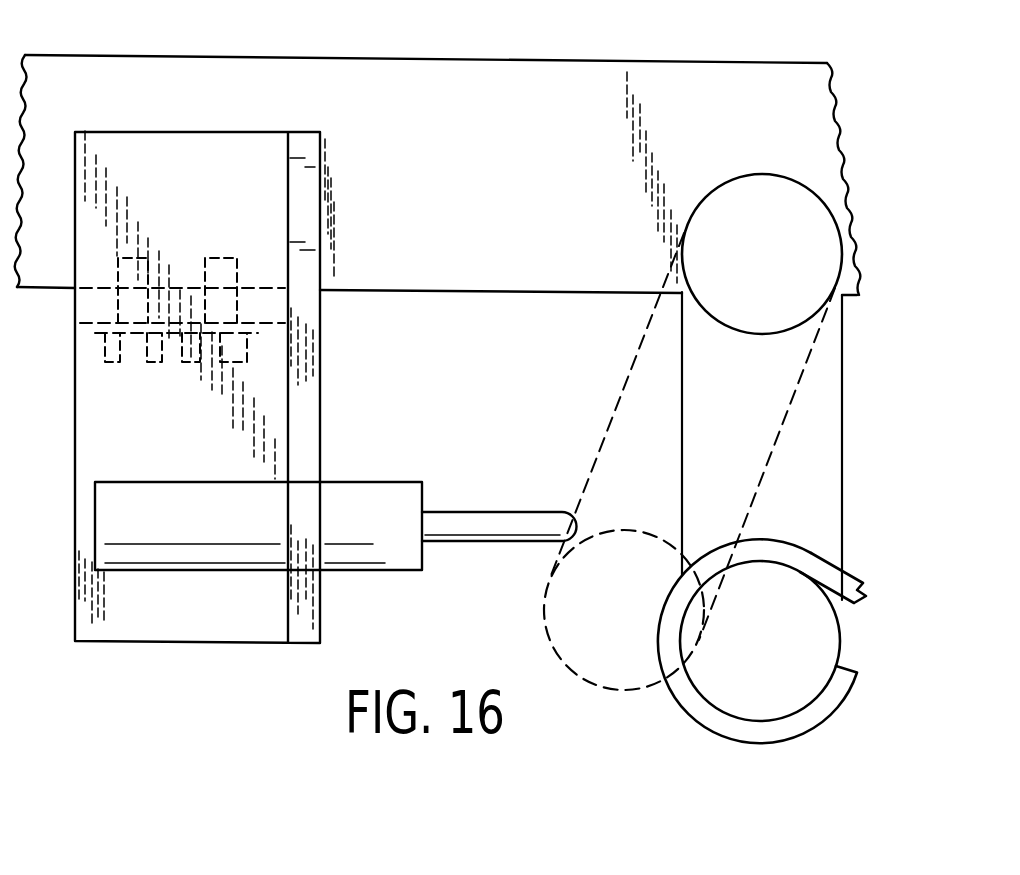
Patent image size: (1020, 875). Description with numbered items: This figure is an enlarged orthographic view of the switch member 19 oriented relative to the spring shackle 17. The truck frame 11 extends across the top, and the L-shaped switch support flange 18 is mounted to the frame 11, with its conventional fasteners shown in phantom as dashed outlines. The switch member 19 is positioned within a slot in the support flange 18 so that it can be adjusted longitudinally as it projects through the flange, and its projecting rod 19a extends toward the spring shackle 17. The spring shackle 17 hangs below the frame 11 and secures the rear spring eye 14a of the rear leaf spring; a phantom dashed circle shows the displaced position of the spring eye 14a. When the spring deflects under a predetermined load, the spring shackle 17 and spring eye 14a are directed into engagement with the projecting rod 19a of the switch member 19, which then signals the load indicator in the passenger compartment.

The frame 11 is at (577, 73).
The L-shaped switch support flange 18 is at (319, 326).
The switch member 19 is at (401, 492).
The projecting rod 19a is at (492, 522).
The spring shackle 17 is at (697, 448).
The rear spring eye 14a is at (702, 710).